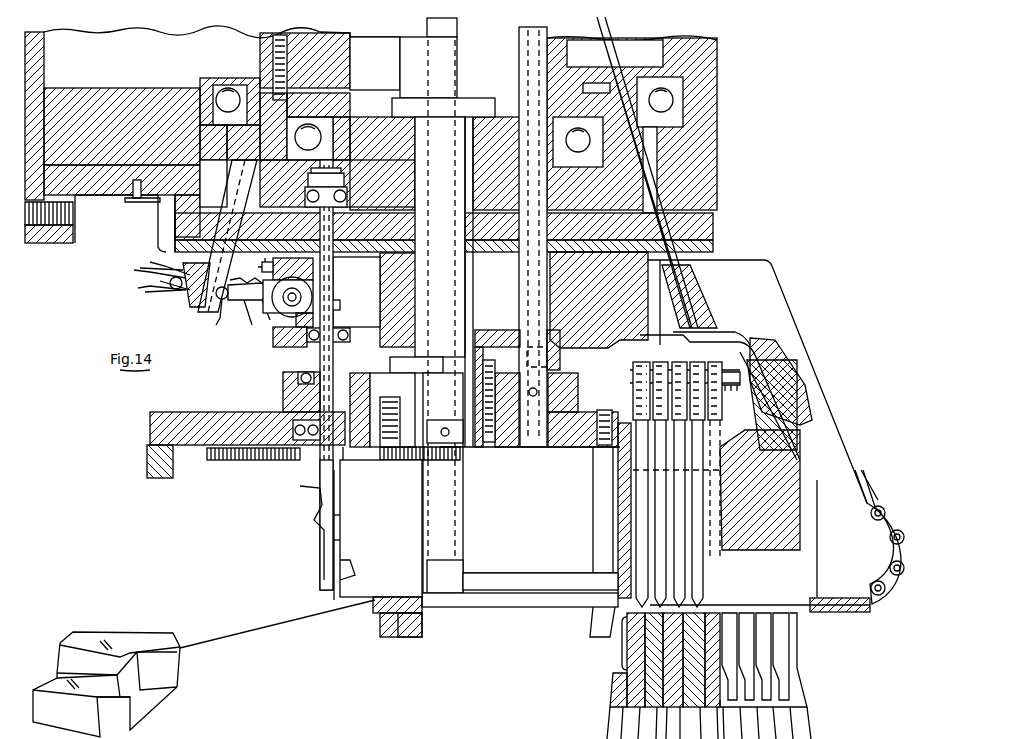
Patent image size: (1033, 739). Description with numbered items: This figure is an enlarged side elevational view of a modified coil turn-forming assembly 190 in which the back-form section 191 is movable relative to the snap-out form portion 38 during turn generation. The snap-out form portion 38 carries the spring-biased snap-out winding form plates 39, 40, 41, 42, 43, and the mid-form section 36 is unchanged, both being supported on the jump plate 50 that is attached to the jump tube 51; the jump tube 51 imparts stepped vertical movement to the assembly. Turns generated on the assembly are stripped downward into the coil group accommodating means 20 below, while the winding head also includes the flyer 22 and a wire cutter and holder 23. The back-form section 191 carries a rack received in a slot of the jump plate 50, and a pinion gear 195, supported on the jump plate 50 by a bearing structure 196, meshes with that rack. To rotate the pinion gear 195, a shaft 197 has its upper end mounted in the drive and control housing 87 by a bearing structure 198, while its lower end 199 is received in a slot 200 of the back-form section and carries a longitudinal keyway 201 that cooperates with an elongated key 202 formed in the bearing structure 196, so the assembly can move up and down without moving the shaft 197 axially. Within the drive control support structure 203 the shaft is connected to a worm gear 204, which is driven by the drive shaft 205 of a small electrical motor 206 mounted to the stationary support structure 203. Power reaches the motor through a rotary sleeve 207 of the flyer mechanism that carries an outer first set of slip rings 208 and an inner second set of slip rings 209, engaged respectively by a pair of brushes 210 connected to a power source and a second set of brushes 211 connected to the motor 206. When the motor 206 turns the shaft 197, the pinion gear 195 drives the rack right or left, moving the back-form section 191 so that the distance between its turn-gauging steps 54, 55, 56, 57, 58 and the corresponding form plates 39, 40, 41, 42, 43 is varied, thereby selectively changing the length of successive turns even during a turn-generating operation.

The drive and control housing 87 is at (719, 140).
The bearing structure 198 is at (350, 197).
The electrical motor 206 is at (278, 263).
The drive shaft 205 is at (296, 290).
The worm gear 204 is at (340, 293).
The jump tube 51 is at (453, 318).
The brushes 210 is at (150, 286).
The first set of slip rings 208 is at (183, 300).
The second set of slip rings 209 is at (220, 306).
The second set of brushes 211 is at (244, 308).
The drive control support structure 203 is at (275, 338).
The shaft 197 is at (322, 355).
The rotary sleeve 207 is at (700, 326).
The jump plate 50 is at (181, 411).
The elongated key 202 is at (318, 395).
The bearing structure 196 is at (362, 402).
The snap-out winding form plate 39 is at (650, 487).
The snap-out winding form plate 40 is at (668, 497).
The snap-out winding form plate 41 is at (688, 495).
The snap-out winding form plate 42 is at (700, 500).
The snap-out winding form plate 43 is at (712, 502).
The flyer 22 is at (887, 498).
The keyway 201 is at (322, 486).
The turn-gauging step 58 is at (300, 500).
The pinion gear 195 is at (348, 458).
The turn-gauging step 57 is at (313, 521).
The lower end of shaft 199 is at (342, 523).
The coil turn-forming assembly 190 is at (554, 513).
The mid-form section 36 is at (600, 552).
The turn-gauging step 56 is at (324, 545).
The snap-out form portion 38 is at (768, 539).
The slot 200 is at (343, 580).
The turn-gauging step 55 is at (358, 590).
The wire cutter and holder 23 is at (127, 640).
The turn-gauging step 54 is at (380, 626).
The back-form section 191 is at (409, 642).
The coil group accommodating means 20 is at (825, 722).